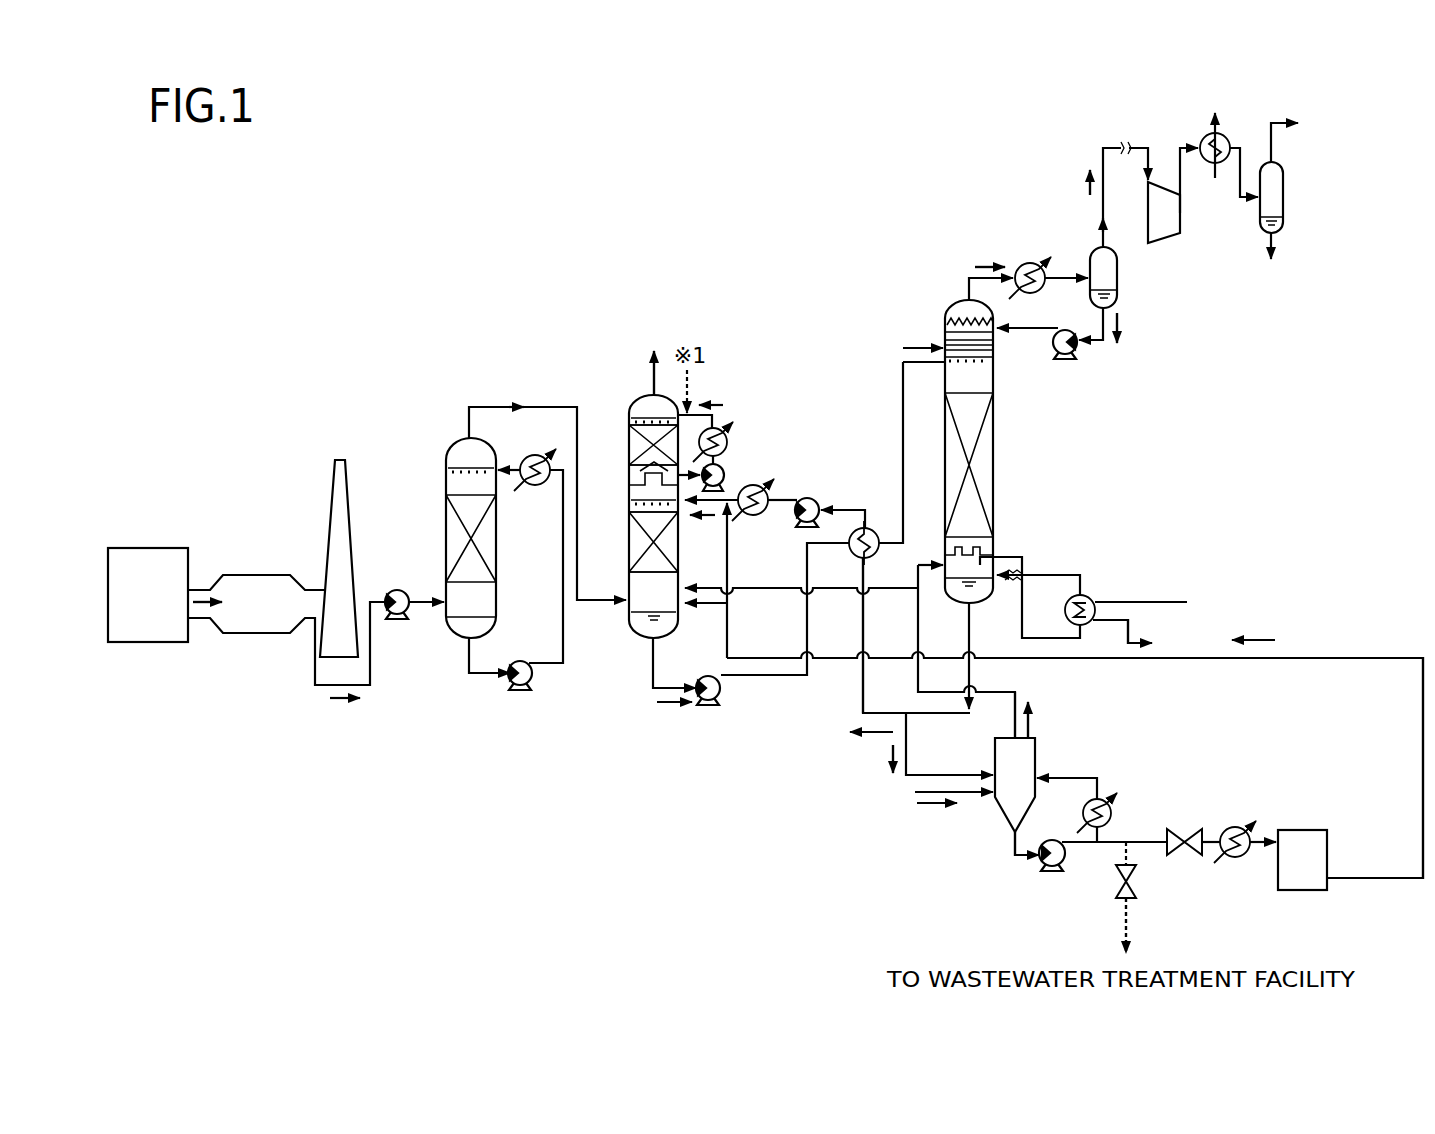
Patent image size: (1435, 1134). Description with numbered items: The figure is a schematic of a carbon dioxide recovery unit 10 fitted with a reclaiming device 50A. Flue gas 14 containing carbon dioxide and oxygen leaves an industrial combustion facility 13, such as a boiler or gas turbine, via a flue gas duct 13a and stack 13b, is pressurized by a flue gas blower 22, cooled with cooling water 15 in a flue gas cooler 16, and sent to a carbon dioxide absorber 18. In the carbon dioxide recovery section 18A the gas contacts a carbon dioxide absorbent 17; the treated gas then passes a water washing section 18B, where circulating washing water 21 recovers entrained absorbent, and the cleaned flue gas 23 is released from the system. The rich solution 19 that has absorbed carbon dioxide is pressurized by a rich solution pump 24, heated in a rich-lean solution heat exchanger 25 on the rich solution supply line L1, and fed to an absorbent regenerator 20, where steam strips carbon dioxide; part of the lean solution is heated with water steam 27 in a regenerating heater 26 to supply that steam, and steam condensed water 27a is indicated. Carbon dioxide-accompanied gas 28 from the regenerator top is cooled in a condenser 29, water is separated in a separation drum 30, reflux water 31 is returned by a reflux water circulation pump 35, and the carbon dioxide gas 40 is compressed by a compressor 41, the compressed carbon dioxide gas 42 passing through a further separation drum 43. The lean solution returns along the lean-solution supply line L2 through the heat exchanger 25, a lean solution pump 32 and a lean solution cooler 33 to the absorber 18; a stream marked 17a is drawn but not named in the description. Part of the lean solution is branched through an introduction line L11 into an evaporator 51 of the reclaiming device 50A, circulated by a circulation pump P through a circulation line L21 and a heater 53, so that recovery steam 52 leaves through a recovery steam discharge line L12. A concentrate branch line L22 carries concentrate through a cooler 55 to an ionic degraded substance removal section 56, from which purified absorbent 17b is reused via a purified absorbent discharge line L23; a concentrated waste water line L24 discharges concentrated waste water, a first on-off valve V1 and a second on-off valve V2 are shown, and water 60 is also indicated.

The CO2 recovery unit 10 is at (696, 160).
The industrial combustion facility 13 is at (168, 546).
The flue gas duct 13a is at (254, 574).
The stack 13b is at (333, 497).
The flue gas 14 is at (199, 598).
The cooling water 15 is at (510, 478).
The flue gas cooler 16 is at (447, 450).
The CO2 absorbent (lean solution) 17 is at (711, 518).
The rich solution 17a is at (887, 755).
The purified absorbent 17b is at (1260, 635).
The CO2 absorber 18 is at (667, 392).
The CO2 recovery section 18A is at (637, 550).
The water washing section 18B is at (636, 447).
The rich solution 19 is at (660, 705).
The absorbent regenerator 20 is at (957, 297).
The washing water 21 is at (714, 404).
The flue gas blower 22 is at (402, 588).
The CO2-removed flue gas 23 is at (645, 378).
The rich solution pump 24 is at (725, 700).
The rich-lean solution heat exchanger 25 is at (866, 528).
The regenerating heater 26 is at (1090, 595).
The water steam 27 is at (1160, 598).
The steam condensed water 27a is at (1143, 638).
The CO2-accompanied gas 28 is at (975, 262).
The condenser 29 is at (1028, 262).
The separation drum 30 is at (1120, 280).
The reflux water 31 is at (1122, 320).
The lean solution pump 32 is at (810, 498).
The lean solution cooler 33 is at (763, 517).
The reflux water circulation pump 35 is at (1045, 352).
The CO2 gas 40 is at (1088, 182).
The compressor 41 is at (1180, 240).
The compressed CO2 gas 42 is at (1290, 108).
The separation drum 43 is at (1285, 183).
The reclaiming device 50A is at (940, 910).
The evaporator 51 is at (1042, 757).
The recovery steam 52 is at (1032, 723).
The heater 53 is at (1110, 817).
The cooler 55 is at (1237, 827).
The ionic degraded substance removal section 56 is at (1302, 890).
The water 60 is at (927, 810).
The rich solution supply line L1 is at (780, 678).
The lean-solution supply line L2 is at (866, 633).
The introduction line L11 is at (913, 766).
The recovery steam discharge line L12 is at (1013, 722).
The circulation line L21 is at (1013, 845).
The concentrate branch line L22 is at (1140, 840).
The purified absorbent discharge line L23 is at (1348, 657).
The concentrated waste water line L24 is at (1117, 920).
The circulation pump P is at (1040, 870).
The first on-off valve V1 is at (1190, 857).
The second on-off valve V2 is at (1133, 897).